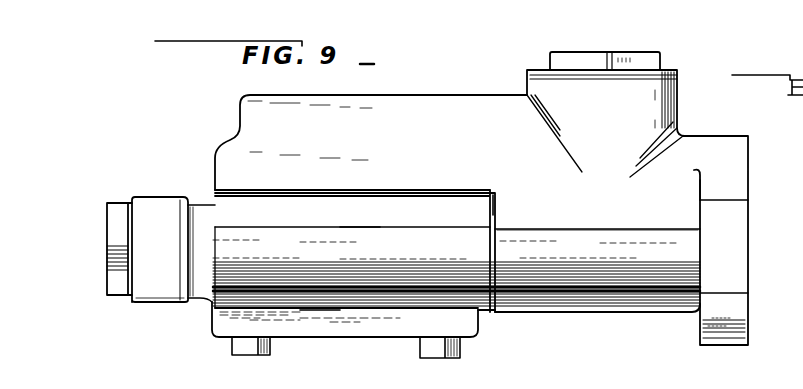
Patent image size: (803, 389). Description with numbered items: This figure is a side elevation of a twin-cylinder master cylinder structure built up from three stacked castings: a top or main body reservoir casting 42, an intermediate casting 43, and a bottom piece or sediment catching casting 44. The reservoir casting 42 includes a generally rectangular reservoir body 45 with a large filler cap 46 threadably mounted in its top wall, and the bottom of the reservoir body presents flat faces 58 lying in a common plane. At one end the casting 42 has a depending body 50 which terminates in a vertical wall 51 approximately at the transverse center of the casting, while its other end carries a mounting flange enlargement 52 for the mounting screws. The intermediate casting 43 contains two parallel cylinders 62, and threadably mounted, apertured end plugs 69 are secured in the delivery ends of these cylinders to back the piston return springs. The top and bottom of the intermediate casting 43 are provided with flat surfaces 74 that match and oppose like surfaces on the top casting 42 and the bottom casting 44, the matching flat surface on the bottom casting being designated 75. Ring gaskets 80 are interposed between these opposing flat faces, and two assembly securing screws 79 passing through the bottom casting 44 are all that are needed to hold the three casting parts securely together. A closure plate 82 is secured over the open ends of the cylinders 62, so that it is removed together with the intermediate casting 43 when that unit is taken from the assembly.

The main body reservoir casting 42 is at (240, 122).
The intermediate casting 43 is at (213, 197).
The sediment catching casting 44 is at (211, 327).
The reservoir body 45 is at (423, 107).
The filler cap 46 is at (650, 61).
The depending body 50 is at (688, 188).
The vertical wall 51 is at (497, 217).
The mounting flange enlargement 52 is at (733, 243).
The flat faces 58 is at (438, 178).
The cylinders 62 is at (352, 232).
The end plugs 69 is at (115, 216).
The flat surfaces 74 is at (290, 197).
The matching flat surface 75 is at (317, 312).
The assembly securing screws 79 is at (252, 348).
The ring gaskets 80 is at (468, 193).
The closure plate 82 is at (494, 202).